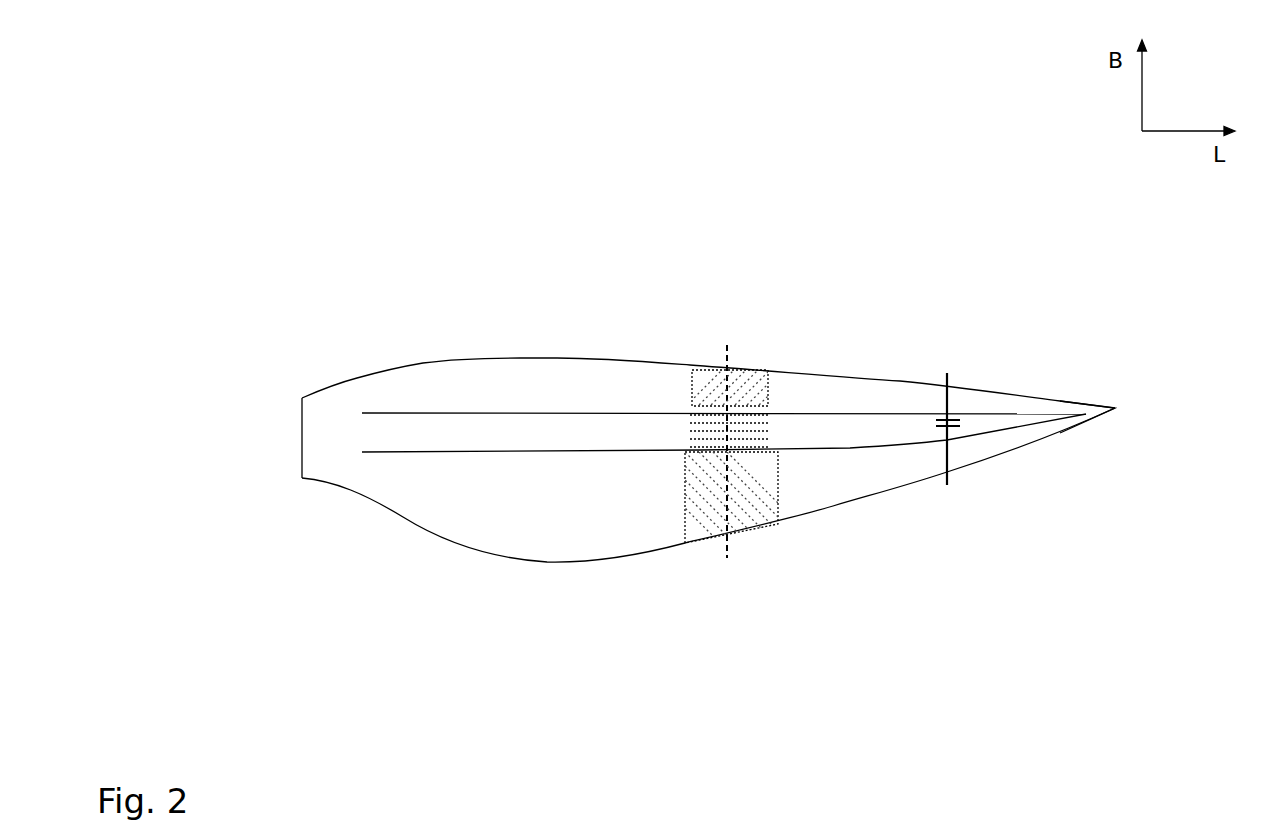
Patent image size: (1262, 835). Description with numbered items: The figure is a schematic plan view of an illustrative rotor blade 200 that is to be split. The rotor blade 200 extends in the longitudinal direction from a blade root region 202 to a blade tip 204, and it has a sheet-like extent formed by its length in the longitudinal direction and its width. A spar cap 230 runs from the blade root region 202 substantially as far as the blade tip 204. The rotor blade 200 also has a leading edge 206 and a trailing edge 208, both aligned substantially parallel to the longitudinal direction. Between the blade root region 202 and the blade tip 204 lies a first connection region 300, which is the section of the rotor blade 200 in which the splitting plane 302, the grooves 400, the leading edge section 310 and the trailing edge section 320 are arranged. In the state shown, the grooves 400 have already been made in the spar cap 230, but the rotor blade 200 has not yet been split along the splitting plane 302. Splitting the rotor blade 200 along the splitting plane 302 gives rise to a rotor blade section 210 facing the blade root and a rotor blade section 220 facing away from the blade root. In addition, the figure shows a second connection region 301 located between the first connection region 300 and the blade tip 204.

The rotor blade 200 is at (686, 438).
The blade root region 202 is at (289, 468).
The blade tip 204 is at (1125, 432).
The leading edge 206 is at (560, 358).
The trailing edge 208 is at (833, 512).
The rotor blade section facing the blade root 210 is at (530, 525).
The rotor blade section facing away from the blade root 220 is at (893, 483).
The spar cap 230 is at (457, 438).
The first connection region 300 is at (744, 461).
The second connection region 301 is at (967, 505).
The splitting plane 302 is at (728, 548).
The leading edge section 310 is at (755, 388).
The trailing edge section 320 is at (756, 494).
The grooves 400 is at (772, 423).